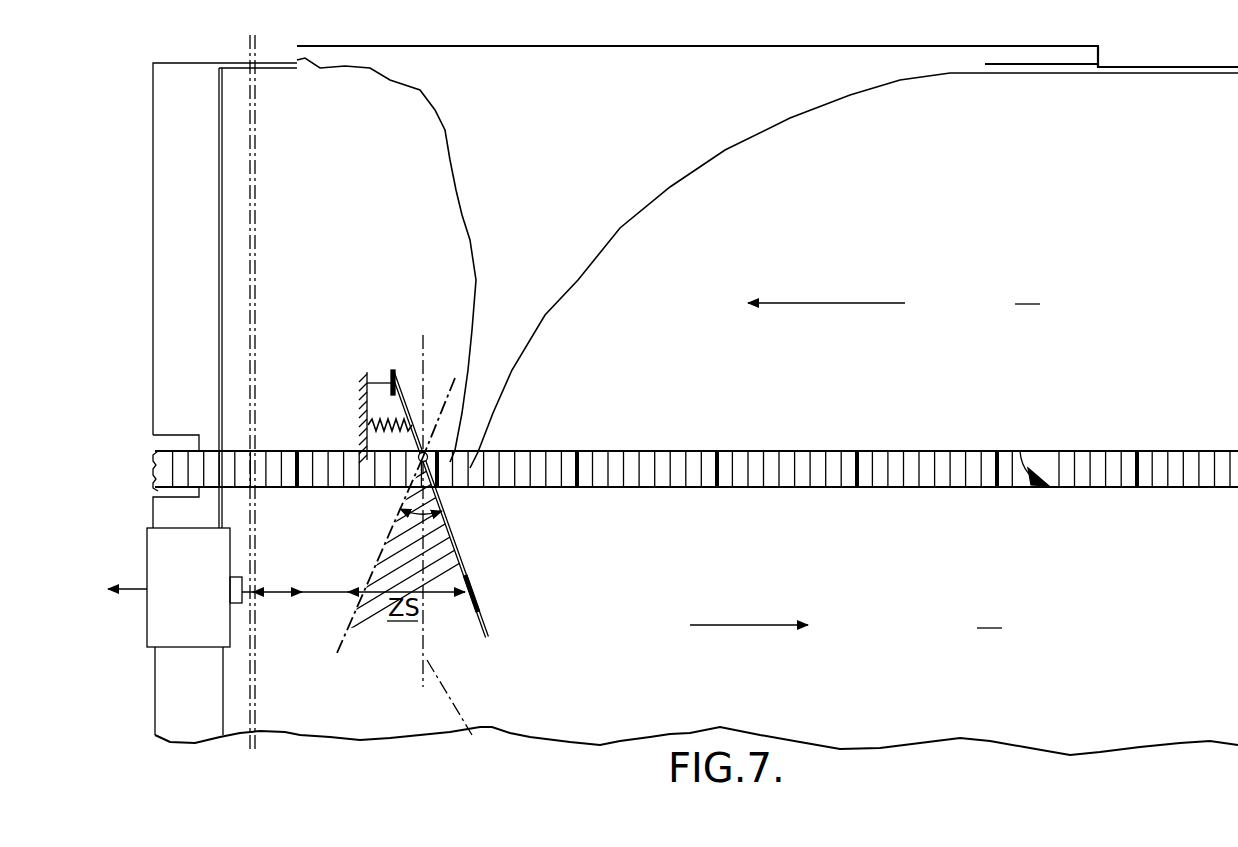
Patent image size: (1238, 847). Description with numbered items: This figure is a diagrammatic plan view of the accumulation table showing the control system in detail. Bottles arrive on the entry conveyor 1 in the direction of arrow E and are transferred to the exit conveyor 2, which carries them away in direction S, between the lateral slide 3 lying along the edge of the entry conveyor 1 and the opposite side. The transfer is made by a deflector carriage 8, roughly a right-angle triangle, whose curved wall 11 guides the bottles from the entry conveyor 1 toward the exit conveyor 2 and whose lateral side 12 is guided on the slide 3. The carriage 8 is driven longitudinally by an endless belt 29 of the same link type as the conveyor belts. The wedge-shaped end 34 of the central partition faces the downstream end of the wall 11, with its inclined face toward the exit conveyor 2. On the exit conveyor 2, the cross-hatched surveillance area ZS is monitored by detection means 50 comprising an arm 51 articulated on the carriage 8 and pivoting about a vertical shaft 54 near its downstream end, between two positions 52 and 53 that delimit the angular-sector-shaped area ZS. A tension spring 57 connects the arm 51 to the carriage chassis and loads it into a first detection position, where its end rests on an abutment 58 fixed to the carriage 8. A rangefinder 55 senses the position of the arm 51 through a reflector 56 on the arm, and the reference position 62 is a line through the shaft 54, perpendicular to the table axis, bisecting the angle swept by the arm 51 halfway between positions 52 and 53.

The entry conveyor 1 is at (894, 292).
The exit conveyor 2 is at (846, 614).
The lateral slide 3 is at (1180, 72).
The carriage 8 is at (560, 140).
The curved wall 11 is at (725, 150).
The lateral side 12 is at (772, 47).
The endless belt 29 is at (150, 455).
The end of the partition 34 is at (1058, 472).
The detection means 50 is at (472, 557).
The arm 51 is at (445, 532).
The first position 52 is at (337, 655).
The second position 53 is at (490, 640).
The vertical shaft 54 is at (430, 452).
The rangefinder 55 is at (205, 603).
The reflector 56 is at (480, 614).
The tension spring 57 is at (365, 440).
The abutment 58 is at (380, 380).
The reference position 62 is at (456, 549).